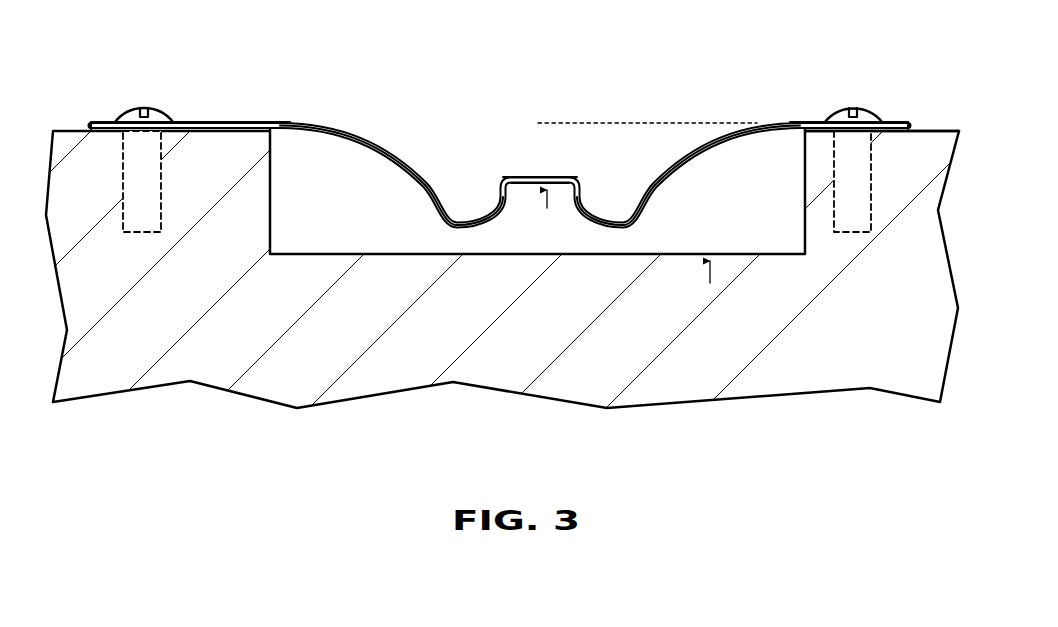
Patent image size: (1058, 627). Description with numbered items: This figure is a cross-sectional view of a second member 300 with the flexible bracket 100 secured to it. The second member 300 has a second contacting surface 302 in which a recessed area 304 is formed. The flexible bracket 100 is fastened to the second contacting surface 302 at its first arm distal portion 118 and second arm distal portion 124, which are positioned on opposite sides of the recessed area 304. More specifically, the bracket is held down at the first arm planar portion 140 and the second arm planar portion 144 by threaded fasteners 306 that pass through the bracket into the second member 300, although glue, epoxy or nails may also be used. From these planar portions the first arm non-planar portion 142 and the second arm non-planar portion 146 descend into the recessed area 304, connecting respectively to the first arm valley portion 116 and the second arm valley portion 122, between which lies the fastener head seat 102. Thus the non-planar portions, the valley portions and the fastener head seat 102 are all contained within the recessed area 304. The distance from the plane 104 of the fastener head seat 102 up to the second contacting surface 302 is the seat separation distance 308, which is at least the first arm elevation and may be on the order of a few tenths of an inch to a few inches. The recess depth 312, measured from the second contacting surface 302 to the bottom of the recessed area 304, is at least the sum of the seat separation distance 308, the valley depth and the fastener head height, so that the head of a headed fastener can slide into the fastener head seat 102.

The flexible bracket 100 is at (680, 172).
The fastener head seat 102 is at (525, 177).
The plane of the fastener head seat 104 is at (525, 180).
The first arm valley portion 116 is at (457, 221).
The first arm distal portion 118 is at (305, 122).
The second arm valley portion 122 is at (623, 221).
The second arm distal portion 124 is at (775, 122).
The first arm planar portion 140 is at (103, 122).
The first arm non-planar portion 142 is at (375, 150).
The second arm planar portion 144 is at (893, 122).
The second arm non-planar portion 146 is at (700, 170).
The second member 300 is at (166, 307).
The second contacting surface 302 is at (940, 128).
The recessed area 304 is at (351, 212).
The threaded fasteners 306 is at (162, 190).
The seat separation distance 308 is at (547, 116).
The recess depth 312 is at (710, 116).